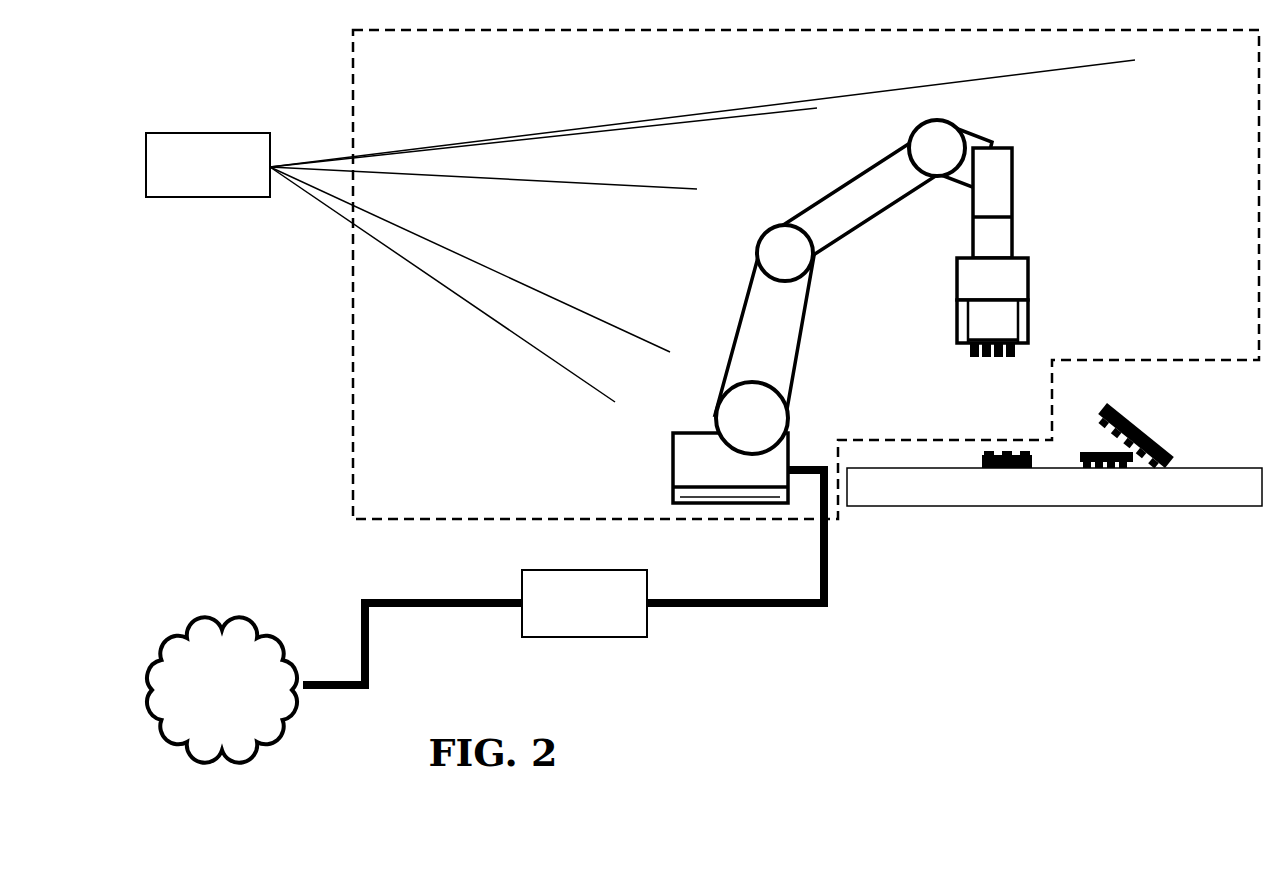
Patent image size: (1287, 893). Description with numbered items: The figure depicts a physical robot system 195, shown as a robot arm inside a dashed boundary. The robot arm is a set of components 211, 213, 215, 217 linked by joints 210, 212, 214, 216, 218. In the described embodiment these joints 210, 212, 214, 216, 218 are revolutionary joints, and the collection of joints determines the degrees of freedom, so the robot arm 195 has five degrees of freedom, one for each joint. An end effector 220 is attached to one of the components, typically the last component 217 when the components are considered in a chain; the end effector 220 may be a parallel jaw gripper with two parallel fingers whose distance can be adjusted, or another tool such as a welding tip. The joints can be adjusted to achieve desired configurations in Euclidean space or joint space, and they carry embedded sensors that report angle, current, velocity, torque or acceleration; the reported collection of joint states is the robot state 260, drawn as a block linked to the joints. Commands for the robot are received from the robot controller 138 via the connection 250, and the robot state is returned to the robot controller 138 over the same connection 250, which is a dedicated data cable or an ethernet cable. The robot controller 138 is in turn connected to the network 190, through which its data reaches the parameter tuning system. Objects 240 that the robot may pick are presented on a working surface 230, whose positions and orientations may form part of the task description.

The robot controller 138 is at (520, 587).
The network 190 is at (228, 622).
The physical robot system 195 is at (400, 68).
The joint 210 is at (915, 278).
The component 211 is at (790, 443).
The joint 212 is at (738, 403).
The component 213 is at (763, 322).
The joint 214 is at (767, 247).
The component 215 is at (870, 188).
The joint 216 is at (928, 141).
The last component 217 is at (972, 198).
The joint 218 is at (1013, 216).
The end effector 220 is at (1042, 263).
The working surface 230 is at (1115, 507).
The objects 240 is at (1099, 438).
The connection 250 is at (740, 608).
The robot state 260 is at (212, 198).